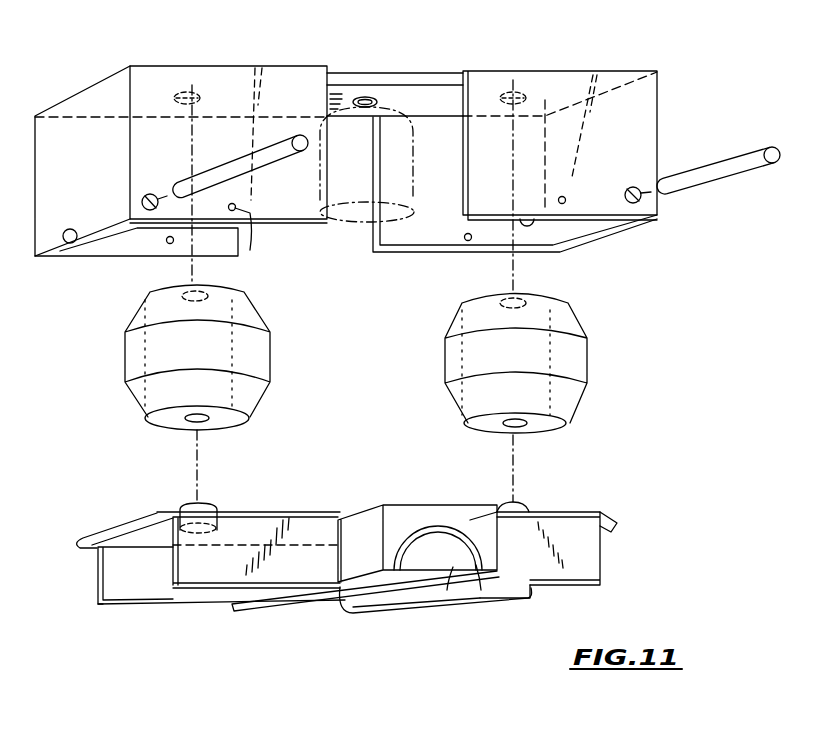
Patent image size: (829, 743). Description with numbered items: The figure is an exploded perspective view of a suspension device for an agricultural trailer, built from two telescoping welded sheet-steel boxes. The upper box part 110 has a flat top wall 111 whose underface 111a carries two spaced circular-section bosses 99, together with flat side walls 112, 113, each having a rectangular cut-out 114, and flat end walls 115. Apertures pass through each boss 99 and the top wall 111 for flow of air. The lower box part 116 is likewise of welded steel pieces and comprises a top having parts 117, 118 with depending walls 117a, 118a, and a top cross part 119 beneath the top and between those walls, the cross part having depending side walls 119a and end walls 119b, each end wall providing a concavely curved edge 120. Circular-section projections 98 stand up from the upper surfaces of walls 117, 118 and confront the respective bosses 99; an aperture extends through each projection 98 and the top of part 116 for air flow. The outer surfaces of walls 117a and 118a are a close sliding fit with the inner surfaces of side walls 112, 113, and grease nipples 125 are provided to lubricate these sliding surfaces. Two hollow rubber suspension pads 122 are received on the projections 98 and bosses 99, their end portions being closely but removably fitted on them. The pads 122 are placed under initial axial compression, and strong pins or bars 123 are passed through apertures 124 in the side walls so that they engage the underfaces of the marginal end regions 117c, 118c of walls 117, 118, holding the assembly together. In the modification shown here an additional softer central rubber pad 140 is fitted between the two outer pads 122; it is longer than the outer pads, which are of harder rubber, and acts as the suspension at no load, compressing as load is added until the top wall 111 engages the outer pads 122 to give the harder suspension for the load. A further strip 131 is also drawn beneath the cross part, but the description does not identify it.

The circular-section projection 98 is at (208, 505).
The circular-section boss 99 is at (194, 90).
The upper box part 110 is at (673, 104).
The flat top wall 111 is at (428, 80).
The underface of the top wall 111a is at (427, 95).
The flat side wall 112 is at (115, 243).
The flat side wall 113 is at (282, 85).
The rectangular cut-out 114 is at (372, 237).
The flat end wall 115 is at (53, 230).
The lower box part 116 is at (128, 608).
The top part 117 is at (240, 532).
The depending wall 117a is at (115, 582).
The marginal end region 117c is at (83, 538).
The top part 118 is at (575, 512).
The depending wall 118a is at (520, 572).
The marginal end region 118c is at (617, 532).
The top cross part 119 is at (458, 467).
The depending side wall 119a is at (360, 567).
The end wall 119b is at (478, 518).
The concavely curved edge 120 is at (340, 600).
The rubber suspension pad 122 is at (124, 395).
The pin or bar 123 is at (720, 165).
The aperture 124 is at (636, 207).
The grease nipple 125 is at (172, 243).
The strip 131 is at (287, 610).
The central rubber pad 140 is at (348, 133).